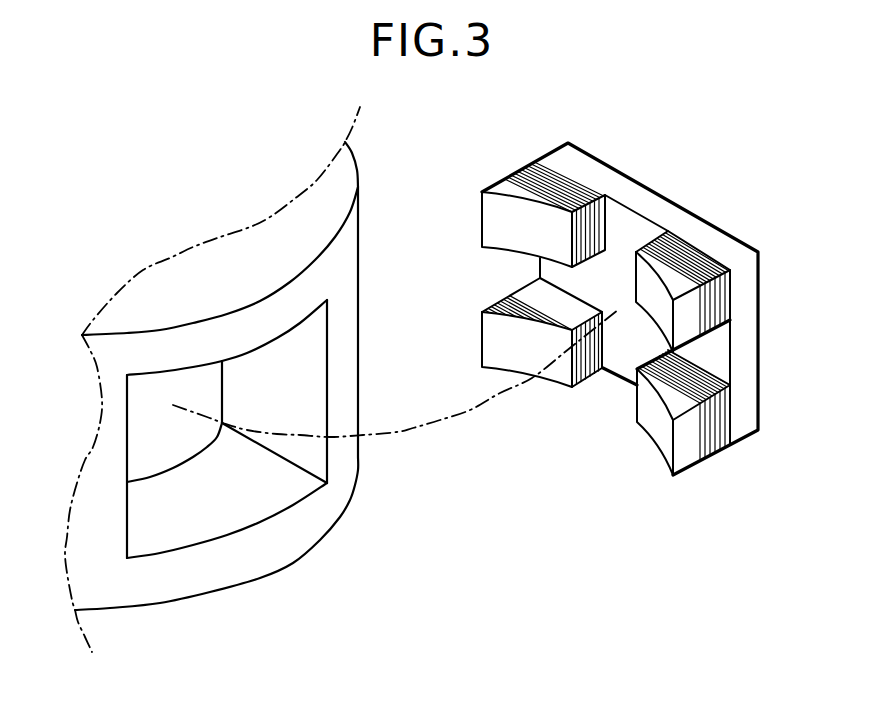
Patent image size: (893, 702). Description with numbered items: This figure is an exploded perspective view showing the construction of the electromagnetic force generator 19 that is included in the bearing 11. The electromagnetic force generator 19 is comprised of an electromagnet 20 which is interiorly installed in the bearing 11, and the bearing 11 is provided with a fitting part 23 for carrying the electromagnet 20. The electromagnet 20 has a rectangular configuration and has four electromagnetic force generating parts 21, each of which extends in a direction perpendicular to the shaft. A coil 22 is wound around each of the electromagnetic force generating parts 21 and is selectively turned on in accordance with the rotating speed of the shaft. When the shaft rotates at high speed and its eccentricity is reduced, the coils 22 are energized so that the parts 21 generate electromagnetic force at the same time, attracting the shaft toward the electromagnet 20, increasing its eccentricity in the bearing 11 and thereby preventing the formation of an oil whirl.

The bearing 11 is at (343, 455).
The electromagnetic force generator 19 is at (582, 325).
The electromagnet 20 is at (650, 203).
The electromagnetic force generating part 21 is at (512, 178).
The coil 22 is at (533, 167).
The fitting part 23 is at (262, 475).